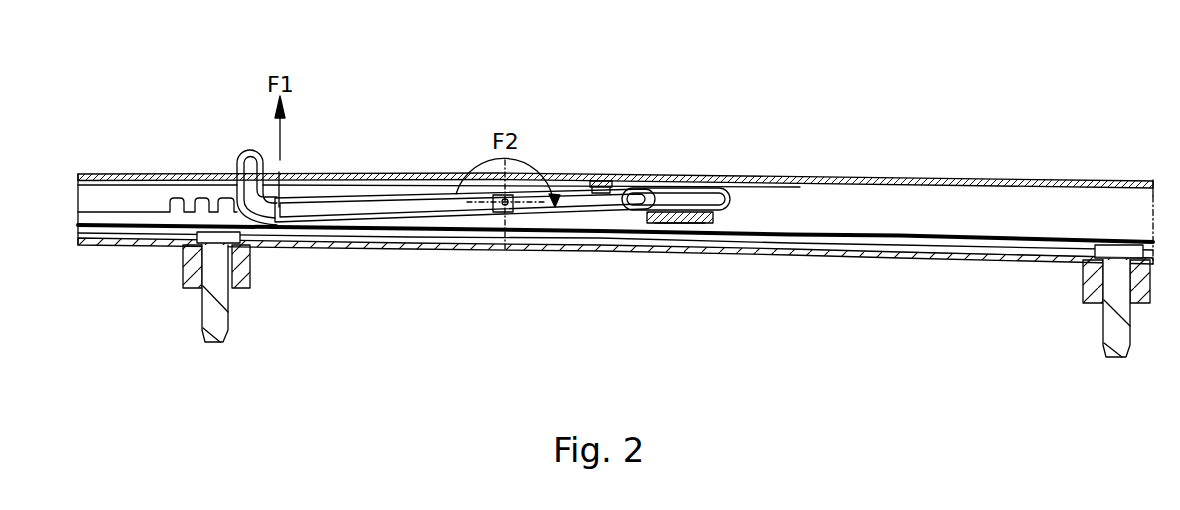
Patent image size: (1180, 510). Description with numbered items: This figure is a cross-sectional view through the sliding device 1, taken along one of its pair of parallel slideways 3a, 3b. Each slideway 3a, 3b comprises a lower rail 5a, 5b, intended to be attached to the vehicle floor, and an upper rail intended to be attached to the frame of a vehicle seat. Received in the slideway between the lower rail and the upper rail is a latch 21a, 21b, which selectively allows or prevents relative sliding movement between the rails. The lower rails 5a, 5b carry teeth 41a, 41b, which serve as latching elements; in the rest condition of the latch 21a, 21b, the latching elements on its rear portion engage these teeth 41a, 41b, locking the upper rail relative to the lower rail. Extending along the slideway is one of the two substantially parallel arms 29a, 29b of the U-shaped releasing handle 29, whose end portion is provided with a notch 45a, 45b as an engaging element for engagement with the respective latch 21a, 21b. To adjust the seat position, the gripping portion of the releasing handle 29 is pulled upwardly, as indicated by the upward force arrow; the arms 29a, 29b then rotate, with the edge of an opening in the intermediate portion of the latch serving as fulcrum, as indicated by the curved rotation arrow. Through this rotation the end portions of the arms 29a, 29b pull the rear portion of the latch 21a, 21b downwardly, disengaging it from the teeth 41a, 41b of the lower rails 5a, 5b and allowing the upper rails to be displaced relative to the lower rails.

The sliding device 1 is at (787, 121).
The slideway 3b is at (600, 294).
The slideway 3a is at (141, 258).
The lower rail 5b is at (1026, 295).
The lower rail 5a is at (985, 262).
The latch 21b is at (737, 263).
The latch 21a is at (731, 197).
The releasing handle 29 is at (274, 233).
The arm 29b is at (465, 162).
The arm 29a is at (363, 196).
The tooth 41b is at (395, 218).
The tooth 41a is at (193, 217).
The notch 45b is at (622, 151).
The notch 45a is at (602, 186).